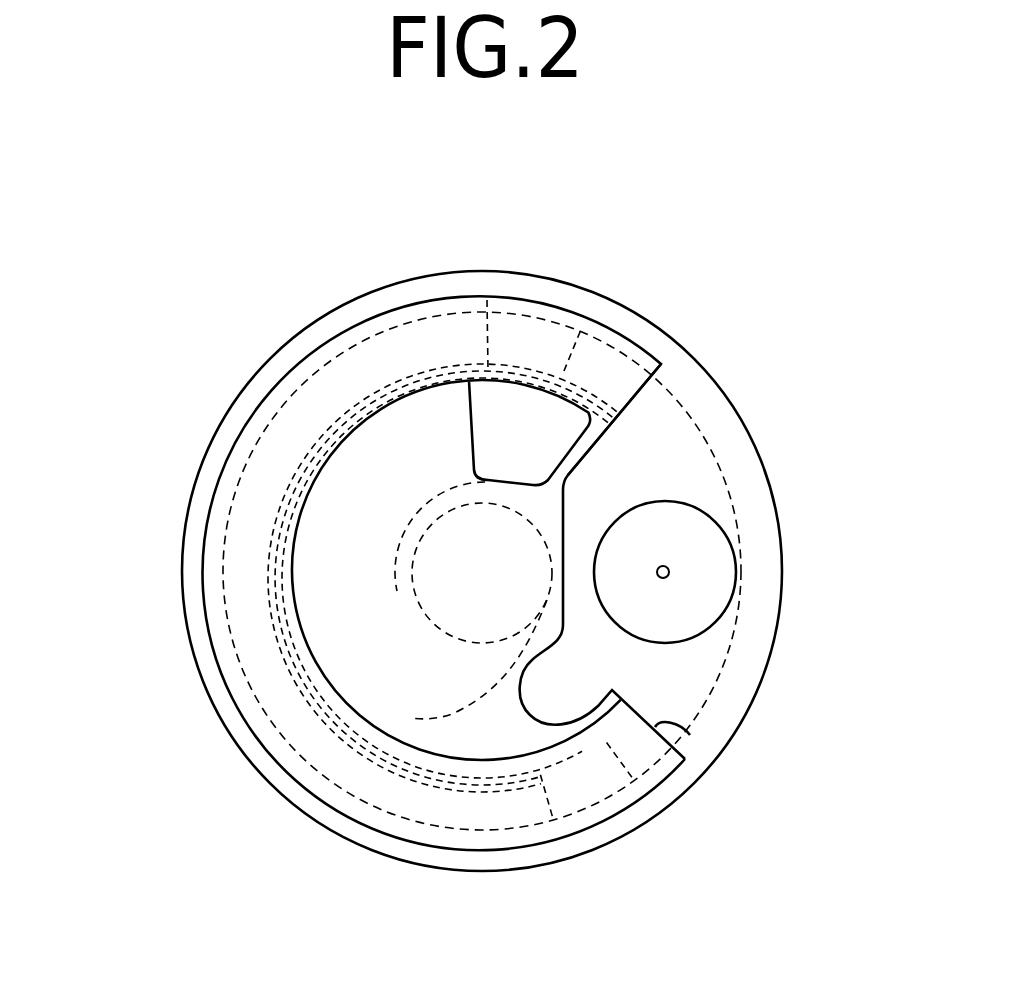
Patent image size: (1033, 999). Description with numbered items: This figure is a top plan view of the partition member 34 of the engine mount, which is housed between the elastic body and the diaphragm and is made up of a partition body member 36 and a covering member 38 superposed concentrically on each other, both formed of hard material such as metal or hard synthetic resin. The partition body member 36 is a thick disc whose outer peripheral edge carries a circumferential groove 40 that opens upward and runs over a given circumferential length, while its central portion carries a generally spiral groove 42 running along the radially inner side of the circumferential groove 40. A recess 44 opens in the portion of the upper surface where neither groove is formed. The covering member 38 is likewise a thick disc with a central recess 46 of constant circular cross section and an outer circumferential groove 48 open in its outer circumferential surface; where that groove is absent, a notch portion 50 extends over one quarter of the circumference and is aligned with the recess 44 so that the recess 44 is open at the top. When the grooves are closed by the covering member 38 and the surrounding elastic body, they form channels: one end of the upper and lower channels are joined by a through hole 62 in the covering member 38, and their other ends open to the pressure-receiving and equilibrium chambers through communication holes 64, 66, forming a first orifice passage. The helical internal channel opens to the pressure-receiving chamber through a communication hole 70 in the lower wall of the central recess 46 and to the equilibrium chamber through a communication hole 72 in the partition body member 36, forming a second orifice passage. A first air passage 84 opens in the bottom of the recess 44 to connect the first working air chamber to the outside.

The partition member 34 is at (726, 379).
The partition body member 36 is at (680, 383).
The covering member 38 is at (513, 310).
The circumferential groove 40 is at (345, 351).
The spiral groove 42 is at (383, 712).
The recess 44 is at (703, 545).
The central recess 46 is at (466, 762).
The outer circumferential groove 48 is at (480, 297).
The notch portion 50 is at (647, 387).
The through hole 62 is at (590, 345).
The communication hole 64 is at (690, 735).
The communication hole 66 is at (593, 802).
The communication hole 70 is at (471, 418).
The communication hole 72 is at (432, 622).
The first air passage 84 is at (669, 574).